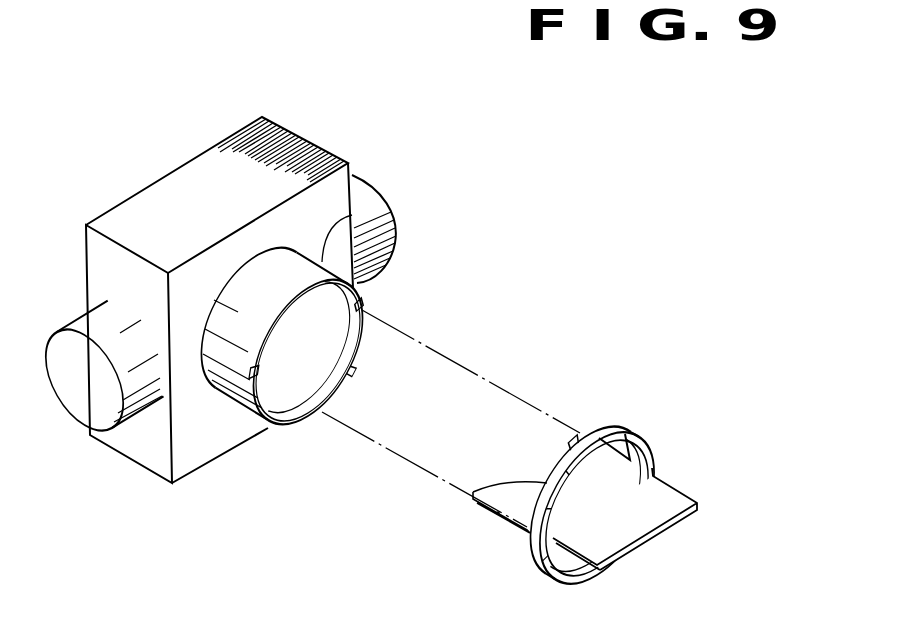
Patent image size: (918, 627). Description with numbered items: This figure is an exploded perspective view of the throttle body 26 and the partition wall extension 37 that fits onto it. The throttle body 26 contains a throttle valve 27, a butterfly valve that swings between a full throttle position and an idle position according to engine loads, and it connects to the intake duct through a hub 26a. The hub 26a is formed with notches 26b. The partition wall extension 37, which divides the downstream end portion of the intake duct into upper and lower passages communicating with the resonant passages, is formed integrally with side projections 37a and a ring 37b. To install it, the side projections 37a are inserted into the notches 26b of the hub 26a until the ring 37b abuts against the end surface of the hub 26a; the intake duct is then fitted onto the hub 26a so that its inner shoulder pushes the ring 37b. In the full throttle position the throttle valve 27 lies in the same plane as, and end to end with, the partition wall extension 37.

The throttle body 26 is at (305, 138).
The hub 26a is at (354, 217).
The notches 26b is at (366, 308).
The throttle valve 27 is at (290, 342).
The partition wall extension 37 is at (680, 478).
The side projections 37a is at (632, 436).
The ring 37b is at (627, 433).